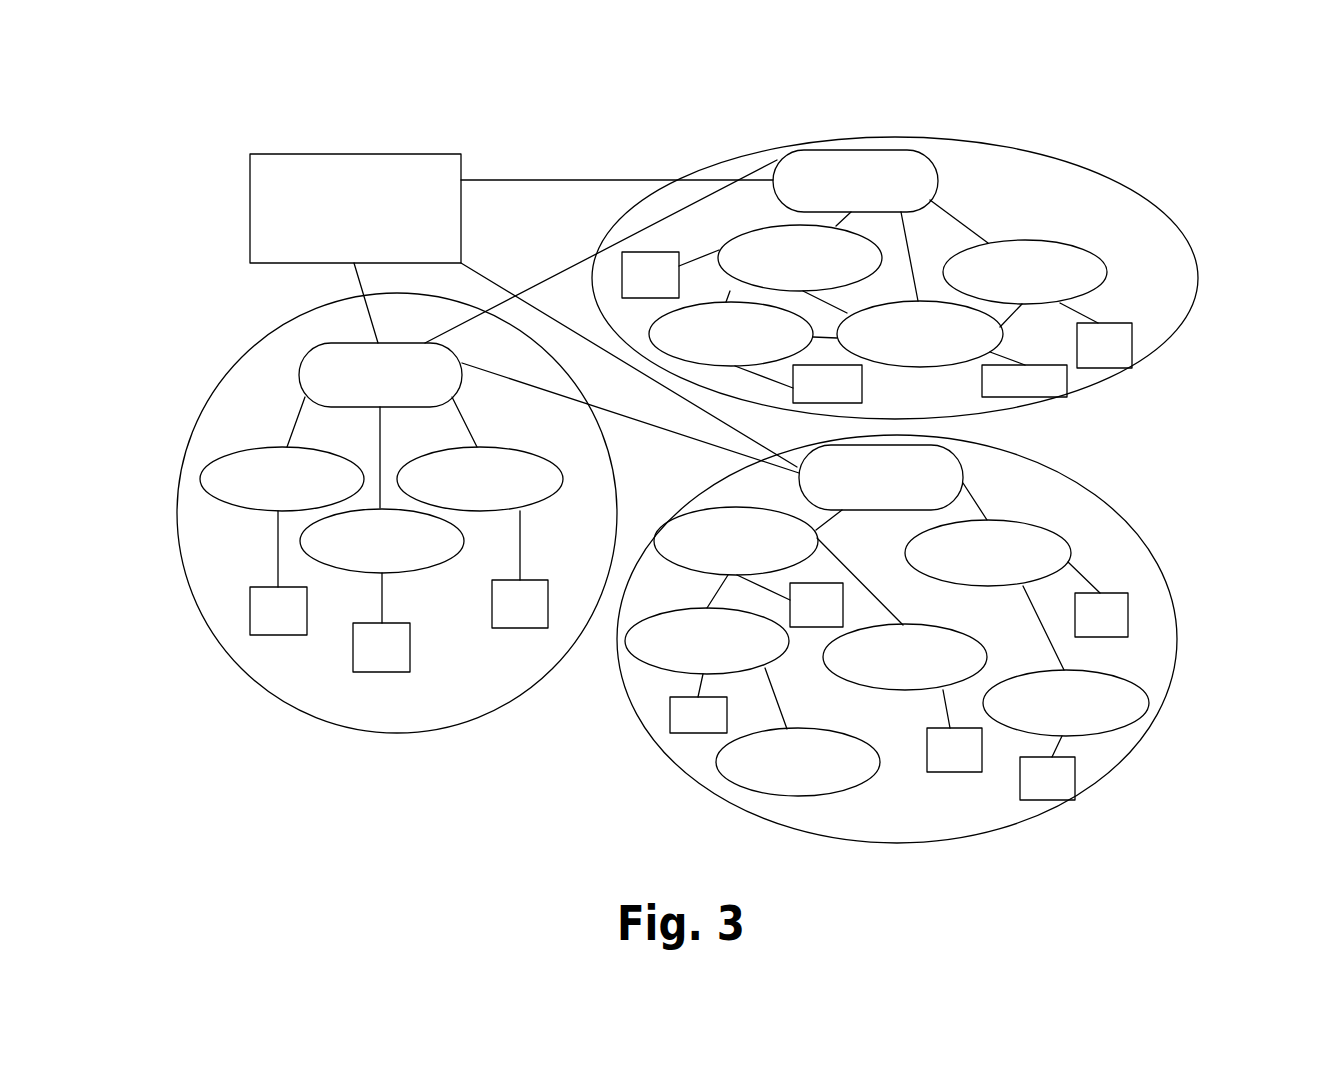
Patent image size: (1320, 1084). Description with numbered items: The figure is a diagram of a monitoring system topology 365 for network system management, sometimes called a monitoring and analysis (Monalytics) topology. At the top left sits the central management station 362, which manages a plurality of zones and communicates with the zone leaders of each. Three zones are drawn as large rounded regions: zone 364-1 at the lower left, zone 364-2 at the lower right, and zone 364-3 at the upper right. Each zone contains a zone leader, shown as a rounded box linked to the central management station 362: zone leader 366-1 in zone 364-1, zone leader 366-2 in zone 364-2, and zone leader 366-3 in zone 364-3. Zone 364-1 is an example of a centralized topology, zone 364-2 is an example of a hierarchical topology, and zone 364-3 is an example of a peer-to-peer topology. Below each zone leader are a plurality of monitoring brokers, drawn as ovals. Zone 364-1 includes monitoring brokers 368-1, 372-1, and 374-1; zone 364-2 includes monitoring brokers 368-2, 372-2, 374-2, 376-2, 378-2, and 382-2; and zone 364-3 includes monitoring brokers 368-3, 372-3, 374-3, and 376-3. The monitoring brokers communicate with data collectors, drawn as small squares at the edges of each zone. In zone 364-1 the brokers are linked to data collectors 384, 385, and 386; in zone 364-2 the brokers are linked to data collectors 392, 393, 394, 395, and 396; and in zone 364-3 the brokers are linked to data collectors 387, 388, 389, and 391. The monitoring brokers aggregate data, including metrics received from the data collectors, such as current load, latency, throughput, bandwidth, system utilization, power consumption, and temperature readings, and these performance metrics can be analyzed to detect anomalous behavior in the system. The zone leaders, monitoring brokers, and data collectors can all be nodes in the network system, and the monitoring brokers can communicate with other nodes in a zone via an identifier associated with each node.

The central management station 362 is at (355, 208).
The monitoring system topology 365 is at (950, 113).
The zone 364-1 is at (259, 679).
The zone 364-2 is at (1160, 727).
The zone 364-3 is at (1190, 249).
The zone leader 366-1 is at (380, 375).
The zone leader 366-2 is at (881, 477).
The zone leader 366-3 is at (855, 181).
The monitoring broker 368-1 is at (282, 479).
The monitoring broker 368-2 is at (736, 541).
The monitoring broker 368-3 is at (800, 258).
The monitoring broker 372-1 is at (480, 479).
The monitoring broker 372-2 is at (707, 641).
The monitoring broker 372-3 is at (1025, 272).
The monitoring broker 374-1 is at (382, 541).
The monitoring broker 374-2 is at (988, 553).
The monitoring broker 374-3 is at (920, 334).
The monitoring broker 376-2 is at (905, 657).
The monitoring broker 376-3 is at (731, 334).
The monitoring broker 378-2 is at (798, 762).
The monitoring broker 382-2 is at (1066, 703).
The data collector 384 is at (250, 608).
The data collector 385 is at (377, 672).
The data collector 386 is at (517, 628).
The data collector 387 is at (652, 252).
The data collector 388 is at (862, 383).
The data collector 389 is at (1050, 397).
The data collector 391 is at (1132, 338).
The data collector 392 is at (697, 733).
The data collector 393 is at (945, 772).
The data collector 394 is at (1045, 800).
The data collector 395 is at (1128, 620).
The data collector 396 is at (843, 610).